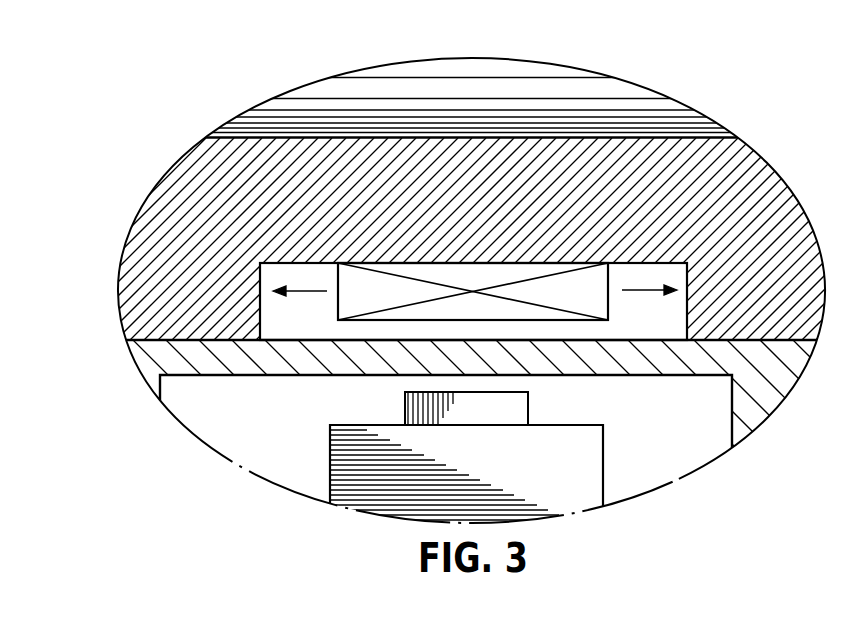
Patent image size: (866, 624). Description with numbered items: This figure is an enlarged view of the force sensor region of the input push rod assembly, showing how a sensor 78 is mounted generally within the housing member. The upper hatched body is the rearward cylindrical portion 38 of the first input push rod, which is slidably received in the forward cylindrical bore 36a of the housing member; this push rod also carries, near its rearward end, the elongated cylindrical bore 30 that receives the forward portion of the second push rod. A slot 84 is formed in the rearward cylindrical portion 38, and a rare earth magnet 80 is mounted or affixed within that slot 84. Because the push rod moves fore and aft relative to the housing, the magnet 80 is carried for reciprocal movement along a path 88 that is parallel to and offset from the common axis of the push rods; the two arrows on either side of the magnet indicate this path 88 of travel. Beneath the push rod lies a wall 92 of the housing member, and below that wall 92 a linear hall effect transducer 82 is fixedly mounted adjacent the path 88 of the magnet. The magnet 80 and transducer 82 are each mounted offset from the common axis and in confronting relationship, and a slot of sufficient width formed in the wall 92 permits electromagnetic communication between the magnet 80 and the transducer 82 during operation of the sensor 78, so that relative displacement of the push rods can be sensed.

The elongated cylindrical bore 30 is at (683, 137).
The rearward cylindrical portion 38 is at (300, 173).
The path 88 is at (312, 290).
The slot 84 is at (300, 332).
The rare earth magnet 80 is at (612, 306).
The wall 92 is at (714, 337).
The forward cylindrical bore 36a is at (203, 325).
The linear hall effect transducer 82 is at (528, 407).
The sensor 78 is at (328, 413).